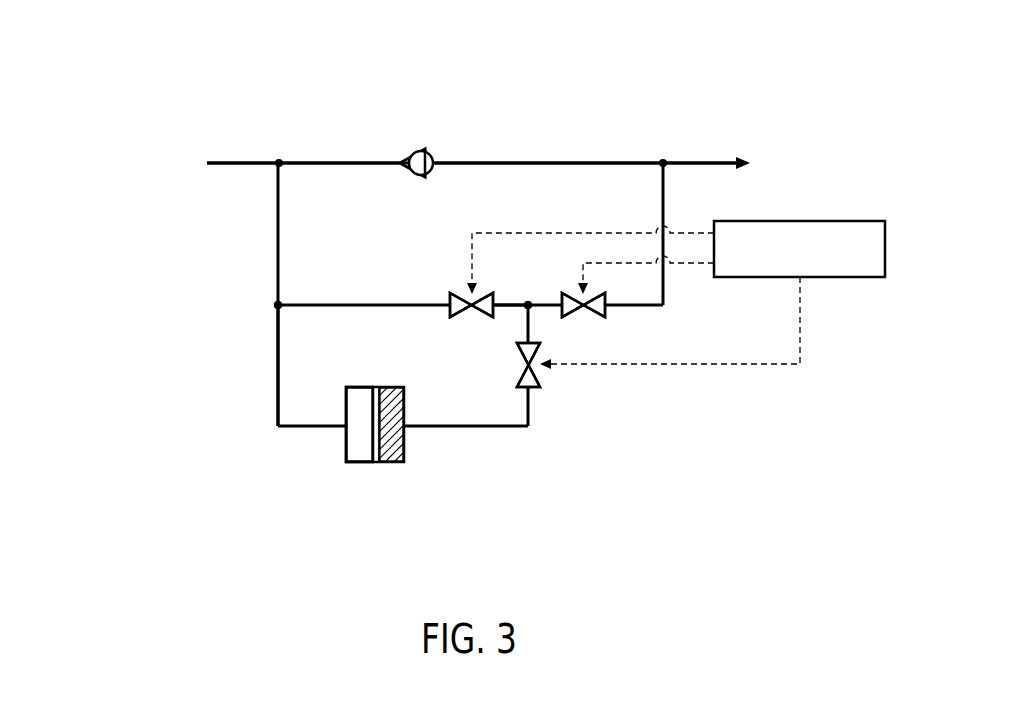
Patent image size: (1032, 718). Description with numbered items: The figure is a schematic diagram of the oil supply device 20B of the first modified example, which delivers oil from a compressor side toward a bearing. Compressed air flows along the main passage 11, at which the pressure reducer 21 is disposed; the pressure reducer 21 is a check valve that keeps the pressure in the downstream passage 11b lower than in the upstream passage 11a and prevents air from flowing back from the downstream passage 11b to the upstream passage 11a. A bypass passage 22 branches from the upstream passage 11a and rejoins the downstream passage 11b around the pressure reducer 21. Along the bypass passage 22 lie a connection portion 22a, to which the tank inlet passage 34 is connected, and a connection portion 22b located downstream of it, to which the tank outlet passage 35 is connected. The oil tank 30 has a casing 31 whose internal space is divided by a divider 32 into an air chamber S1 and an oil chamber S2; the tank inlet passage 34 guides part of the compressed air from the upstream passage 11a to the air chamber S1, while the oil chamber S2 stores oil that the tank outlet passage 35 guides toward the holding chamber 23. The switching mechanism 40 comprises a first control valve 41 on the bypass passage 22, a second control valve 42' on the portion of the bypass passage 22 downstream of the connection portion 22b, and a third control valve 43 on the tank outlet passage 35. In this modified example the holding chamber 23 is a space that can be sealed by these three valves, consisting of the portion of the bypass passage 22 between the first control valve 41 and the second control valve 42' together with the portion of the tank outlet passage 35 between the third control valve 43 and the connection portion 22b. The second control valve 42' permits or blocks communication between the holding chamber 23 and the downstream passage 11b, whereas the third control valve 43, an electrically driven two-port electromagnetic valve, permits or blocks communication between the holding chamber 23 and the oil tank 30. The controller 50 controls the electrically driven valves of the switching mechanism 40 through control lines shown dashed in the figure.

The main passage 11 is at (686, 163).
The upstream passage 11a is at (355, 163).
The downstream passage 11b is at (575, 163).
The pressure reducer 21 is at (410, 150).
The oil supply device 20B is at (525, 105).
The bypass passage 22 is at (352, 305).
The connection portion 22a is at (278, 305).
The connection portion 22b is at (526, 300).
The holding chamber 23 is at (510, 300).
The tank inlet passage 34 is at (278, 378).
The tank outlet passage 35 is at (440, 426).
The oil tank 30 is at (391, 468).
The casing 31 is at (355, 462).
The divider 32 is at (376, 462).
The air chamber S1 is at (358, 398).
The oil chamber S2 is at (390, 398).
The switching mechanism 40 is at (650, 510).
The first control valve 41 is at (458, 317).
The third control valve 43 is at (540, 378).
The second control valve 42' is at (603, 405).
The controller 50 is at (853, 277).